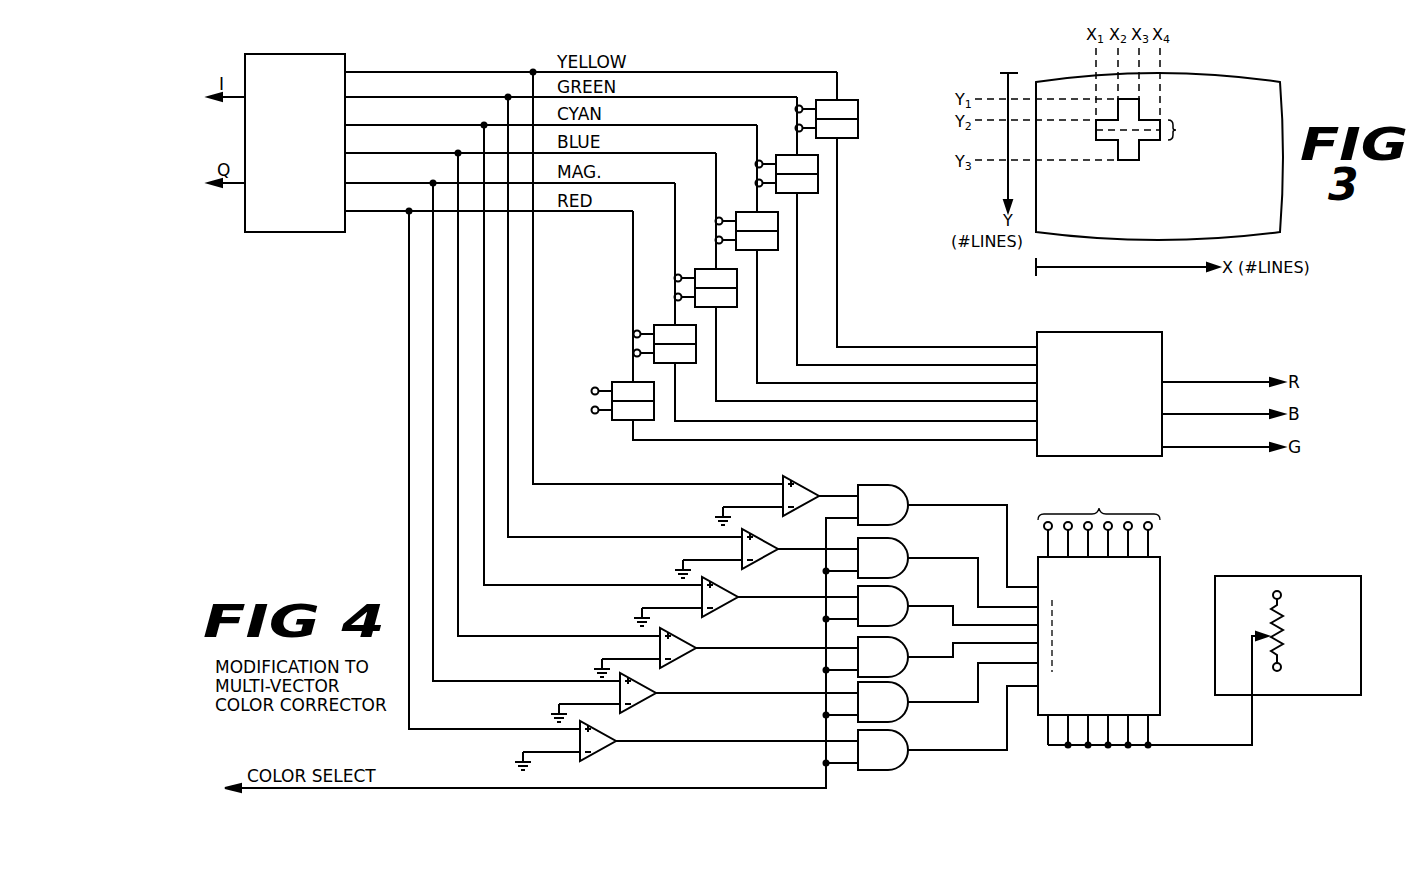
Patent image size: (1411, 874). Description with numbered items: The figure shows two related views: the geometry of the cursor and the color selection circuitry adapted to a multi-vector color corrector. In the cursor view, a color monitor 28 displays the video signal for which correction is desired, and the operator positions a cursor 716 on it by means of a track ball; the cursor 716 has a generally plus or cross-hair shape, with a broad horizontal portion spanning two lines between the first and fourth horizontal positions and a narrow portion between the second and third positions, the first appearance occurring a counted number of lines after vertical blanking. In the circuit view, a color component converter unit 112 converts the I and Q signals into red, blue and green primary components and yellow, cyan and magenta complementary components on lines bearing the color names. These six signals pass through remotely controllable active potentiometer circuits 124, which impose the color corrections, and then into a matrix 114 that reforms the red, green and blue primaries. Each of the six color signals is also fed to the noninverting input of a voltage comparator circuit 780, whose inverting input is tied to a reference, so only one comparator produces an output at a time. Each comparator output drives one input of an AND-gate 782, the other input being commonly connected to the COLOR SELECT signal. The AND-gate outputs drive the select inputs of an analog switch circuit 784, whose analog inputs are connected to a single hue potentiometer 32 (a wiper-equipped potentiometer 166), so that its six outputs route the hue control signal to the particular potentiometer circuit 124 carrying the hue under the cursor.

In FIG. 4, the color component converter unit 112 is at (283, 165).
In FIG. 4, the remotely controllable active potentiometer circuits 124 is at (736, 275).
In FIG. 4, the matrix 114 is at (1088, 418).
In FIG. 4, the voltage comparator circuit 780 is at (668, 628).
In FIG. 4, the AND-gate 782 is at (902, 620).
In FIG. 4, the analog switch circuit 784 is at (1161, 590).
In FIG. 4, the potentiometer 166 is at (1268, 620).
In FIG. 4, the hue potentiometer 32 is at (1288, 635).
In FIG. 3, the color monitor 28 is at (1281, 97).
In FIG. 3, the cursor 716 is at (1139, 160).